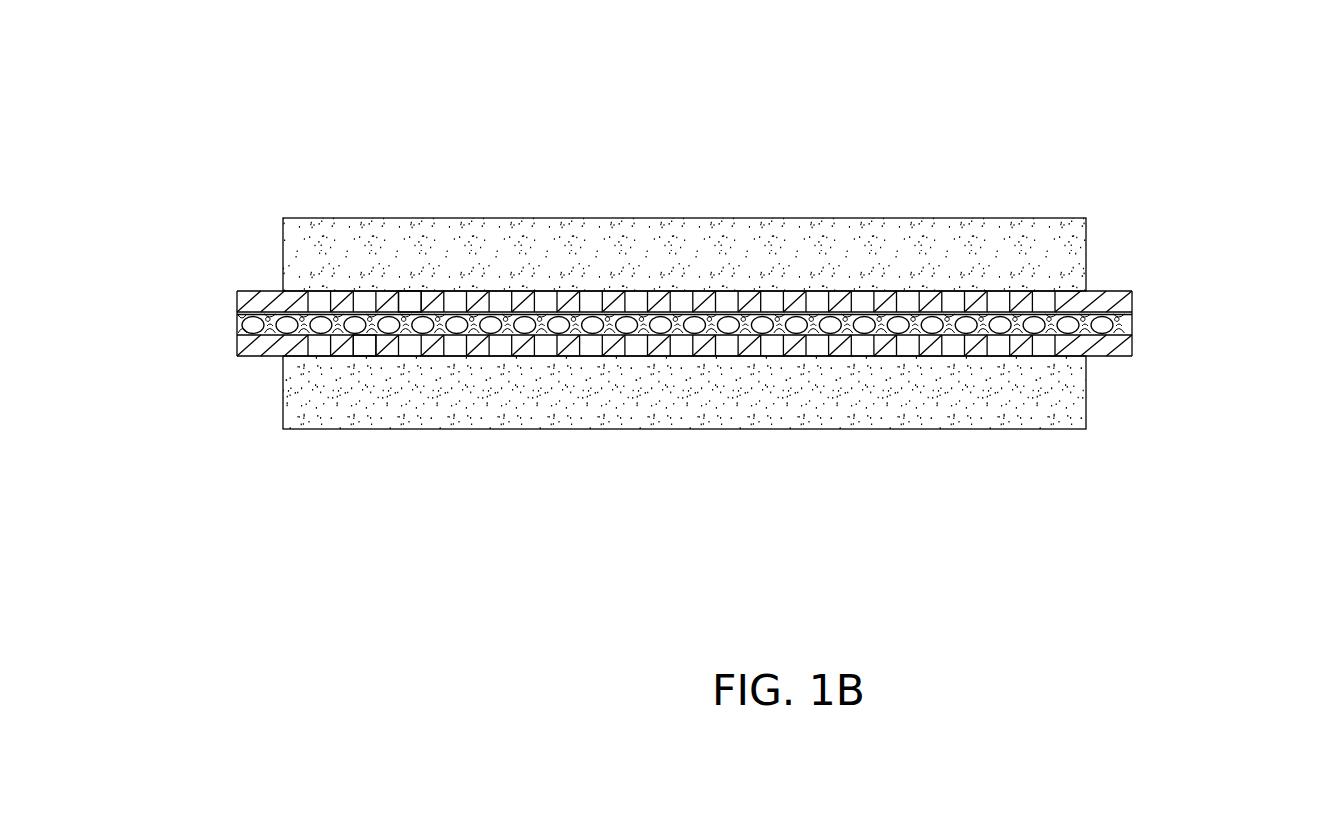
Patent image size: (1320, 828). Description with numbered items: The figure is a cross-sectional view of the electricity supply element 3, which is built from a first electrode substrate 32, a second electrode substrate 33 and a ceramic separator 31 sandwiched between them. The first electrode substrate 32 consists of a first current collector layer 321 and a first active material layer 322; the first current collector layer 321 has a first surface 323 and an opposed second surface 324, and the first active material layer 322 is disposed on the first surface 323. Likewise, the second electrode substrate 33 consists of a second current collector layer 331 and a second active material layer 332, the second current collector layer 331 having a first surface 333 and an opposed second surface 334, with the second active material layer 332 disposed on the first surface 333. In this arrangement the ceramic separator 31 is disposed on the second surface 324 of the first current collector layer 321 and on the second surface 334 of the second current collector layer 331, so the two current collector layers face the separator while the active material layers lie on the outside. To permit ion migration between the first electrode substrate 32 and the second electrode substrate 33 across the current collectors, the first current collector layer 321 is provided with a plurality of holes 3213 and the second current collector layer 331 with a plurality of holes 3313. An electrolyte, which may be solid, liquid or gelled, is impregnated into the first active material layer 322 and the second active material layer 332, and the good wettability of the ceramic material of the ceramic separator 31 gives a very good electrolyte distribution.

The electricity supply element 3 is at (300, 128).
The ceramic separator 31 is at (237, 319).
The first electrode substrate 32 is at (724, 232).
The first current collector layer 321 is at (1133, 298).
The first active material layer 322 is at (1087, 248).
The first surface 323 is at (255, 291).
The second surface 324 is at (237, 310).
The holes 3213 is at (410, 291).
The second electrode substrate 33 is at (733, 421).
The second current collector layer 331 is at (1133, 347).
The second active material layer 332 is at (1087, 397).
The first surface 333 is at (257, 356).
The second surface 334 is at (237, 335).
The holes 3313 is at (363, 357).